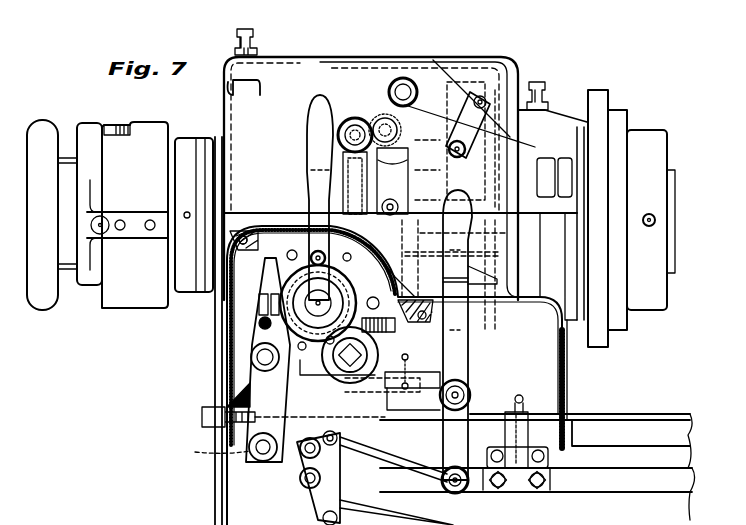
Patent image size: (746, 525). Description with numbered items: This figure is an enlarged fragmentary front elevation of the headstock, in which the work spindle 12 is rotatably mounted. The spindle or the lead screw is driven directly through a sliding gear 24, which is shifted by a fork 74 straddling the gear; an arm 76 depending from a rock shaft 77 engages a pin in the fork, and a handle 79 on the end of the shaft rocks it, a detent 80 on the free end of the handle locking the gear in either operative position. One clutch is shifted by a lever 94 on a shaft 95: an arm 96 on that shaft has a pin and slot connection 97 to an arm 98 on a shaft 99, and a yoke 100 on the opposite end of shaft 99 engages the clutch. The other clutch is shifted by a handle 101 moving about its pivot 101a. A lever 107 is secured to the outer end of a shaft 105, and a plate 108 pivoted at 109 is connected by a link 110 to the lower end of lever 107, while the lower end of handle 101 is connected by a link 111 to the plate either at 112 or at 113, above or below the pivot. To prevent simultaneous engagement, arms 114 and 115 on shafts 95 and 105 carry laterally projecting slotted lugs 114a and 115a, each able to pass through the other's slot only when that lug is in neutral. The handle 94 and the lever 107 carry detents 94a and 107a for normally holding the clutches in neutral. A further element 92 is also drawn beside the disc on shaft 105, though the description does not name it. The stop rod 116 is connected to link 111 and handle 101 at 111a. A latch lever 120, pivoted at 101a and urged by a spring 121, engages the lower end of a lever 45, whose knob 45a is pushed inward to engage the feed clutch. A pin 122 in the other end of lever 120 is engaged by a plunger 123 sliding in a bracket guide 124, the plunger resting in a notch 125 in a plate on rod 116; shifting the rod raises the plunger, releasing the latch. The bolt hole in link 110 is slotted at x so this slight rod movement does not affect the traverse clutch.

The work spindle 12 is at (670, 190).
The sliding gear 24 is at (471, 241).
The lever 45 is at (395, 278).
The knob 45a is at (406, 177).
The fork 74 is at (468, 138).
The arm 76 is at (380, 110).
The rock shaft 77 is at (403, 78).
The handle 79 is at (445, 145).
The detent 80 is at (547, 147).
The disc 92 is at (350, 362).
The lever 94 is at (320, 125).
The detent 94a is at (314, 255).
The shaft 95 is at (318, 310).
The arm 96 is at (348, 262).
The pin and slot connection 97 is at (318, 210).
The arm 98 is at (322, 168).
The shaft 99 is at (352, 125).
The yoke 100 is at (330, 182).
The handle 101 is at (462, 335).
The pivot 101a is at (470, 390).
The shaft 105 is at (262, 355).
The lever 107 is at (283, 398).
The detent 107a is at (262, 352).
The plate 108 is at (312, 500).
The pivot 109 is at (300, 482).
The link 110 is at (285, 463).
The link 111 is at (383, 505).
The connection 111a is at (455, 495).
The connection point 112 is at (338, 437).
The connection point 113 is at (345, 480).
The arm 114 is at (280, 295).
The lug 114a is at (260, 287).
The arm 115 is at (268, 314).
The lug 115a is at (259, 304).
The stop rod 116 is at (600, 488).
The latch lever 120 is at (430, 395).
The spring 121 is at (413, 362).
The pin 122 is at (522, 390).
The plunger 123 is at (528, 403).
The bracket guide 124 is at (506, 440).
The notch 125 is at (518, 495).
The slot x is at (560, 497).